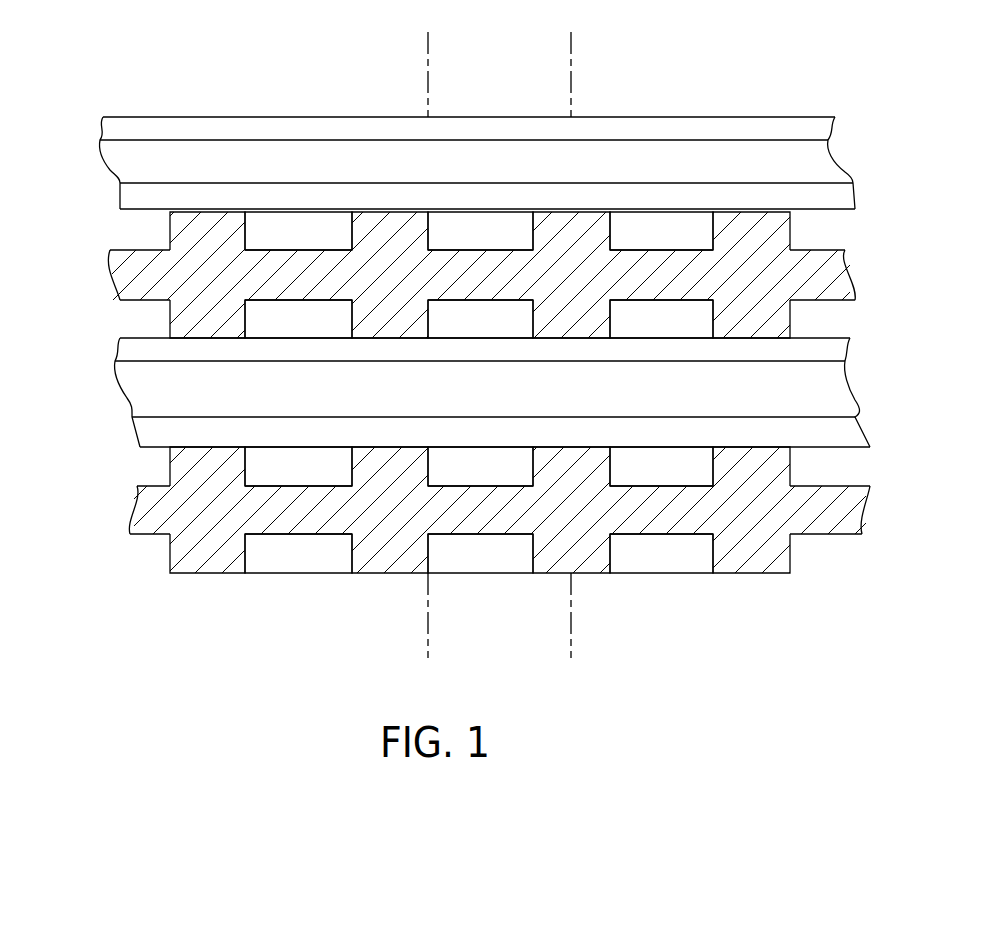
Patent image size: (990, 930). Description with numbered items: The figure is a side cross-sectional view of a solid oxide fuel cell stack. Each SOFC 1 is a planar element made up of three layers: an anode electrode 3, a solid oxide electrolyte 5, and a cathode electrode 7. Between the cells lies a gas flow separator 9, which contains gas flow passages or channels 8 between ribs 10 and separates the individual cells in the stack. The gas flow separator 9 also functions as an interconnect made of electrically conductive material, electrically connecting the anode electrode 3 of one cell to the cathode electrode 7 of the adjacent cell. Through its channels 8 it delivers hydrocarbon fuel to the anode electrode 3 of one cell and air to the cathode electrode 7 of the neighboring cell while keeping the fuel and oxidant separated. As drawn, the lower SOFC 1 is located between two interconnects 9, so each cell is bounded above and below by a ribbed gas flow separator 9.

The solid oxide fuel cell 1 is at (480, 276).
The anode electrode 3 is at (110, 130).
The solid oxide electrolyte 5 is at (105, 162).
The cathode electrode 7 is at (125, 200).
The gas flow passages 8 is at (292, 241).
The gas flow separator 9 is at (477, 392).
The ribs 10 is at (170, 233).